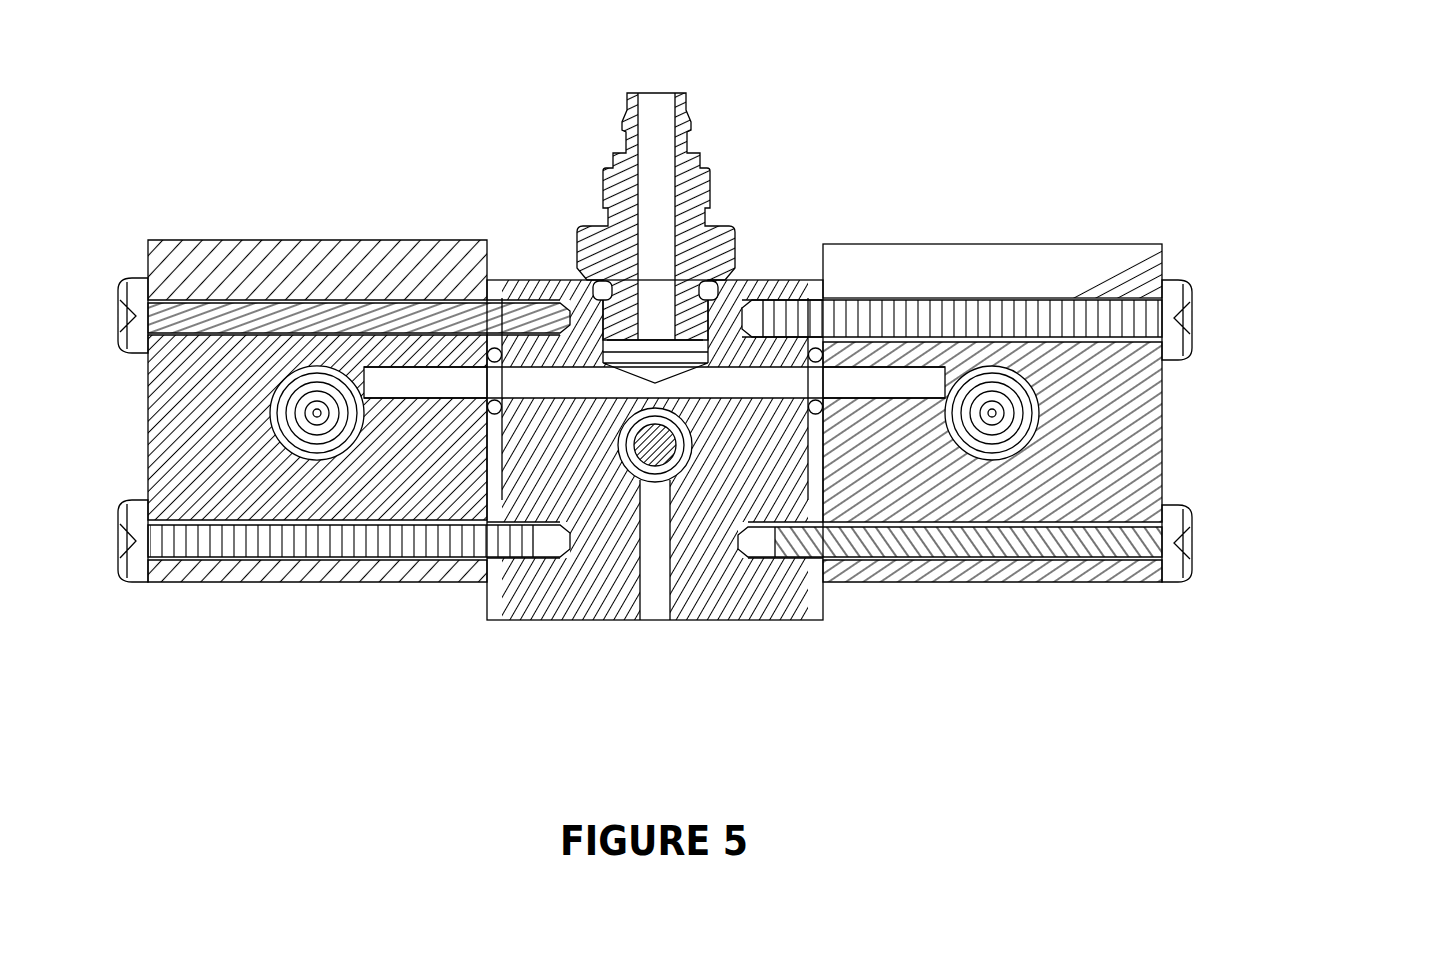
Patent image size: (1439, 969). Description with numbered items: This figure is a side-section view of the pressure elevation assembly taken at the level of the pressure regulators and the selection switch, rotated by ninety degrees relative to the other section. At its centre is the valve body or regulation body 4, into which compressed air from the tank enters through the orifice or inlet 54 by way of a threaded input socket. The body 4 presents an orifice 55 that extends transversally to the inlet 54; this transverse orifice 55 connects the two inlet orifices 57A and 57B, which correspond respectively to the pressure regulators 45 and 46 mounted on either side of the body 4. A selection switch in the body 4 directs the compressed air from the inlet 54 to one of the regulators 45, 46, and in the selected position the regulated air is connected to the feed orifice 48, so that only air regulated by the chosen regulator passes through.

The regulation body 4 is at (740, 590).
The pressure regulator 45 is at (190, 570).
The pressure regulator 46 is at (1130, 397).
The feed orifice 48 is at (655, 582).
The inlet 54 is at (655, 133).
The orifice 55 is at (750, 387).
The inlet orifice 57A is at (410, 387).
The inlet orifice 57B is at (897, 383).